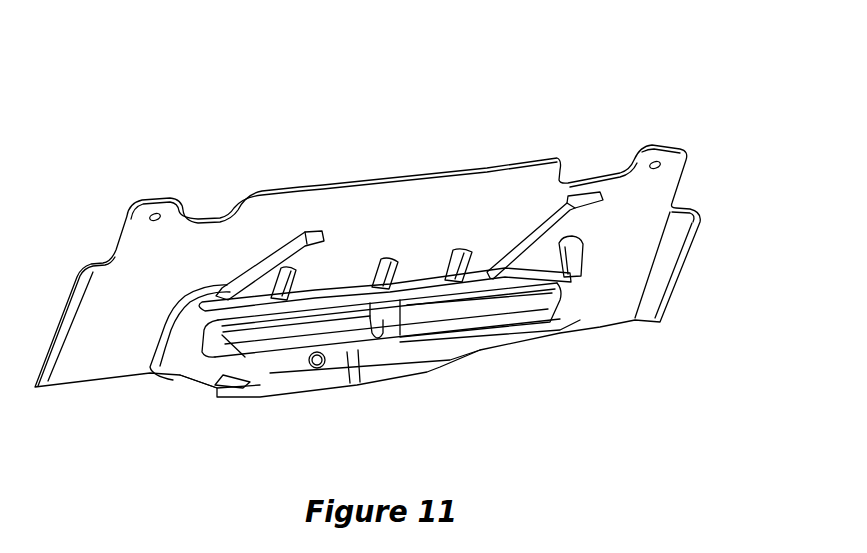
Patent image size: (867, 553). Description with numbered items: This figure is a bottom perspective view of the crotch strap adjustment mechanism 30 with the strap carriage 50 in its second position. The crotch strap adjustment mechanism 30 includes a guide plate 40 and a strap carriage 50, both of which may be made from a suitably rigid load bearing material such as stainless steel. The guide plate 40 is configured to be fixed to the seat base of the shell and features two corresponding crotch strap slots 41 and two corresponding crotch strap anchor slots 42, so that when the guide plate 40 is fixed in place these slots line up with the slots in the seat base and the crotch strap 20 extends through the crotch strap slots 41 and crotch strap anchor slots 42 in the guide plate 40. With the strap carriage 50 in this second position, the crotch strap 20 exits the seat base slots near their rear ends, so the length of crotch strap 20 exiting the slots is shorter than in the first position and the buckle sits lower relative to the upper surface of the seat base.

The crotch strap adjustment mechanism 30 is at (373, 239).
The guide plate 40 is at (147, 238).
The crotch strap slots 41 is at (278, 280).
The crotch strap anchor slots 42 is at (382, 265).
The strap carriage 50 is at (173, 352).
The crotch strap 20 is at (273, 340).